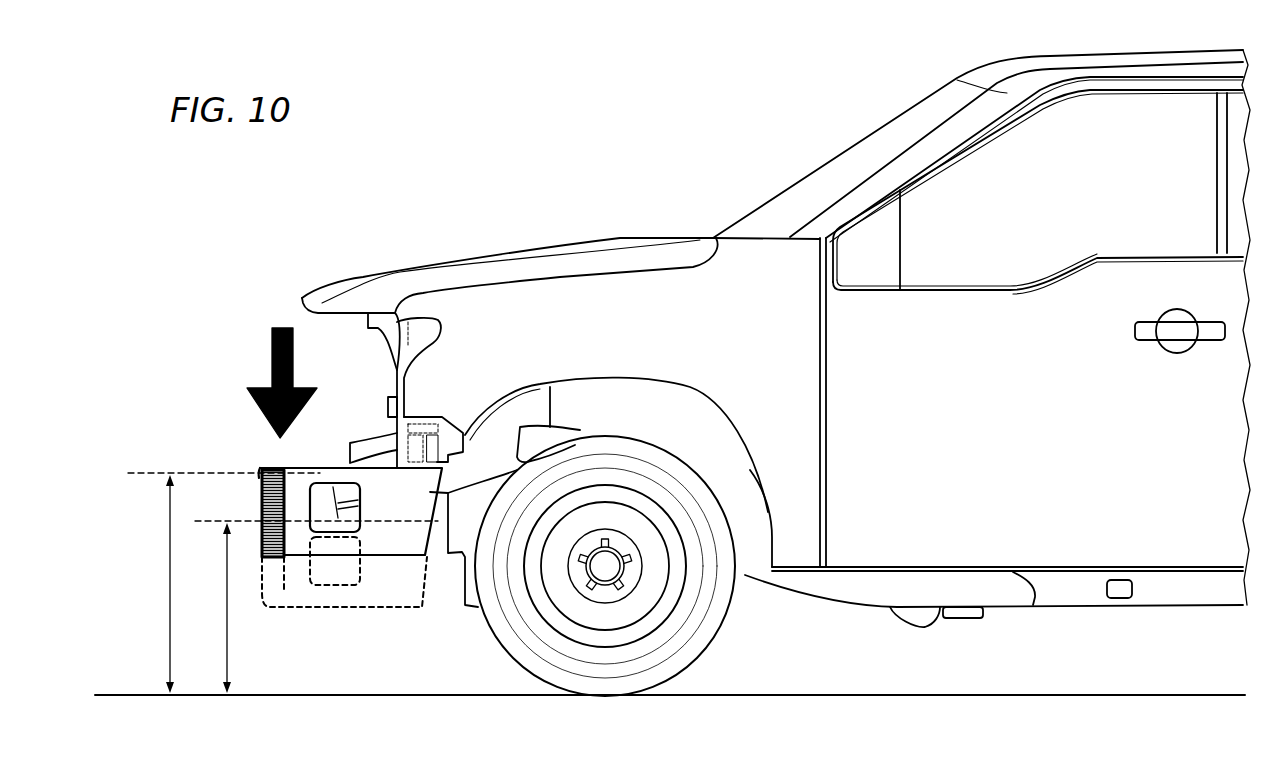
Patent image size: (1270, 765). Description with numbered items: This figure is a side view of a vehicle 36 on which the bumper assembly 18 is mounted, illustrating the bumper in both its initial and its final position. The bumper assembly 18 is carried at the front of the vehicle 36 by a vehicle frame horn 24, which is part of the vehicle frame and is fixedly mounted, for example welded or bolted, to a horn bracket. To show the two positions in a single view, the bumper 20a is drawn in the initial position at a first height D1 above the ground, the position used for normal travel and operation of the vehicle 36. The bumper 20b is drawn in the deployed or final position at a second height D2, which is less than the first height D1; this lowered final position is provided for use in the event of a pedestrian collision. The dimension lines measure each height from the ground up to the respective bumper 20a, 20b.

The vehicle 36 is at (632, 300).
The bumper assembly 18 is at (327, 450).
The bumper 20a is at (270, 467).
The bumper 20b is at (342, 593).
The vehicle frame horn 24 is at (442, 540).
The first height D1 is at (224, 583).
The second height D2 is at (316, 607).